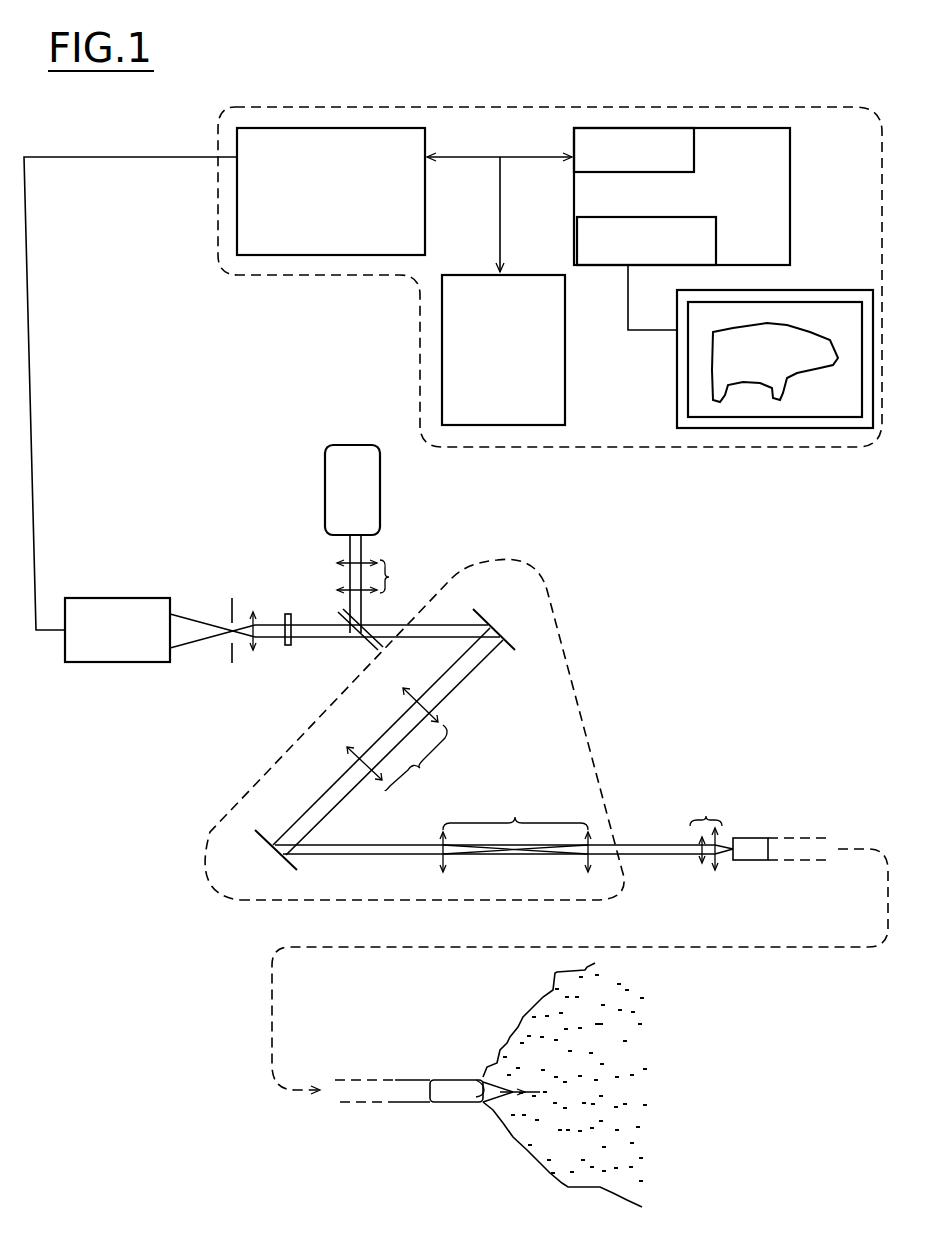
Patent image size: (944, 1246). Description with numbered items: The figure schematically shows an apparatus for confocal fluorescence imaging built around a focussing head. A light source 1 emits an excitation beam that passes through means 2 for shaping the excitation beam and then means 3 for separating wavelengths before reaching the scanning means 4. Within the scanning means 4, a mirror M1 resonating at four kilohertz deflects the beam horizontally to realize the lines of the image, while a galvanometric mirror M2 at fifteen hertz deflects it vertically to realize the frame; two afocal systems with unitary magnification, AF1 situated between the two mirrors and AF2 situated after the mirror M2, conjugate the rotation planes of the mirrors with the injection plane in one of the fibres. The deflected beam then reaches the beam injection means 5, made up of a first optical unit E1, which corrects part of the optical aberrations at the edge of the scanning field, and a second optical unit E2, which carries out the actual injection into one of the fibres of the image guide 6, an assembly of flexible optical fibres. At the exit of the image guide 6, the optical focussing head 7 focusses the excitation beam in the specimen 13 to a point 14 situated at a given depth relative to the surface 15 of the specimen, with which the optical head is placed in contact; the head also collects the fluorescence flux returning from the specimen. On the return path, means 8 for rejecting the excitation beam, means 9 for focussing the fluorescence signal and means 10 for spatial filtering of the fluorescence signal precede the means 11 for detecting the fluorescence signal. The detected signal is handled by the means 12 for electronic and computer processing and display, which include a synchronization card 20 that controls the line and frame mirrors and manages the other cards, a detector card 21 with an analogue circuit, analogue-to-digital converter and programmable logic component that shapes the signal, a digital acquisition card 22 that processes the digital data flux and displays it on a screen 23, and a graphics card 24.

The light source 1 is at (343, 495).
The means for shaping the excitation beam 2 is at (371, 576).
The means for separating wavelengths 3 is at (353, 647).
The scanning means 4 is at (585, 702).
The beam injection means 5 is at (706, 805).
The image guide 6 is at (758, 838).
The optical focussing head 7 is at (452, 1100).
The means for rejecting the excitation beam 8 is at (288, 612).
The means for focussing the fluorescence signal 9 is at (249, 620).
The means for spatial filtering of the fluorescence signal 10 is at (229, 654).
The means for detecting the fluorescence signal 11 is at (129, 646).
The means for electronic and computer processing 12 is at (545, 107).
The specimen 13 is at (553, 1140).
The point 14 is at (540, 1092).
The surface 15 is at (482, 1084).
The synchronization card 20 is at (520, 371).
The detector card 21 is at (339, 211).
The digital acquisition card 22 is at (648, 166).
The screen 23 is at (677, 374).
The graphics card 24 is at (653, 255).
The mirror M1 is at (519, 633).
The mirror M2 is at (257, 851).
The afocal system AF1 is at (407, 740).
The afocal system AF2 is at (515, 831).
The first optical unit E1 is at (701, 862).
The second optical unit E2 is at (717, 870).